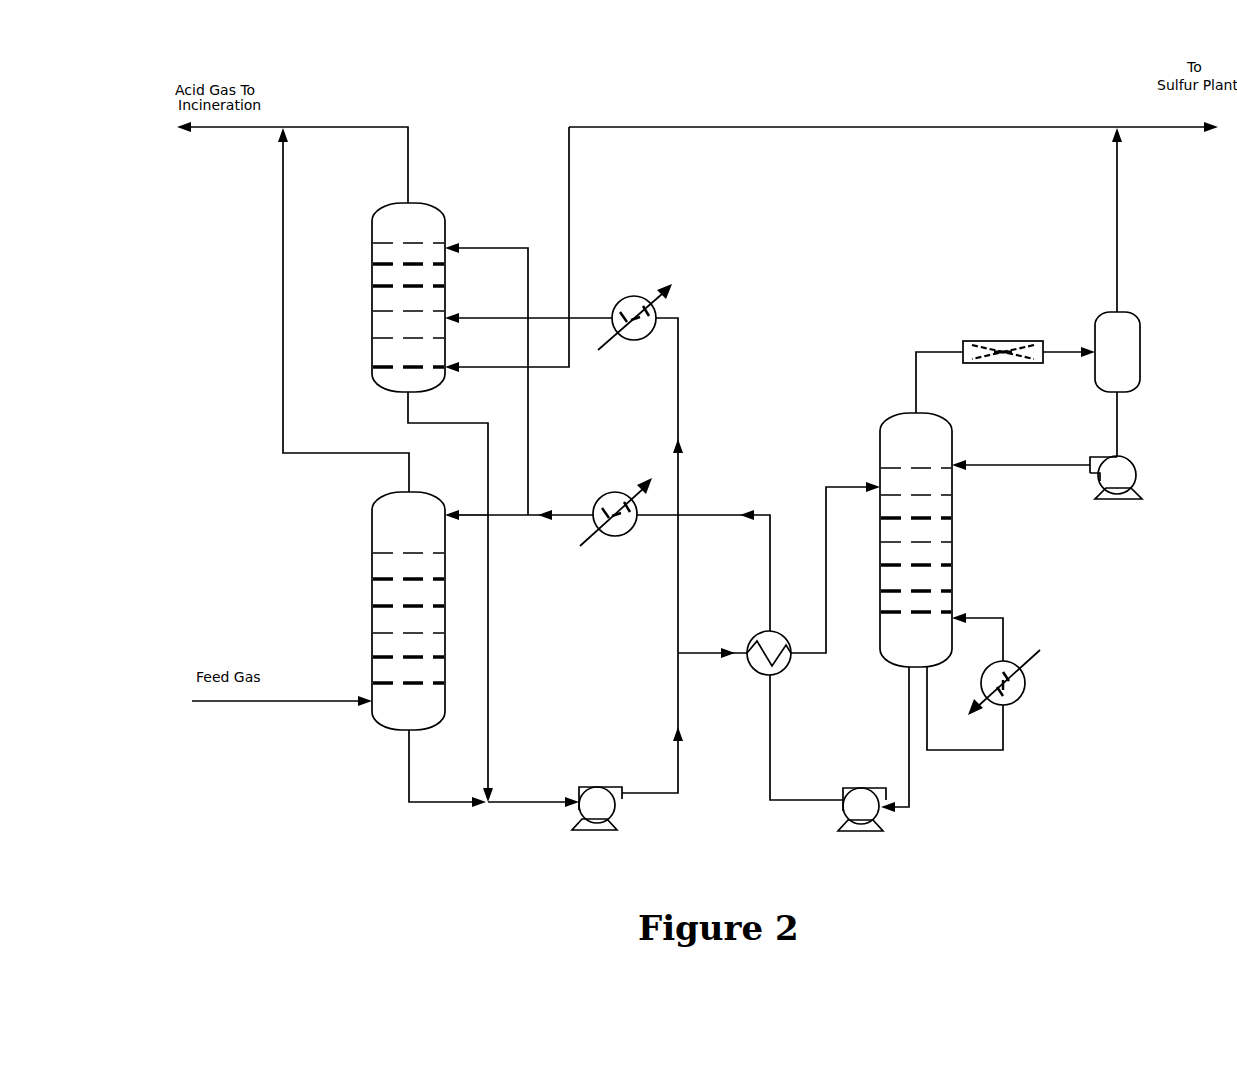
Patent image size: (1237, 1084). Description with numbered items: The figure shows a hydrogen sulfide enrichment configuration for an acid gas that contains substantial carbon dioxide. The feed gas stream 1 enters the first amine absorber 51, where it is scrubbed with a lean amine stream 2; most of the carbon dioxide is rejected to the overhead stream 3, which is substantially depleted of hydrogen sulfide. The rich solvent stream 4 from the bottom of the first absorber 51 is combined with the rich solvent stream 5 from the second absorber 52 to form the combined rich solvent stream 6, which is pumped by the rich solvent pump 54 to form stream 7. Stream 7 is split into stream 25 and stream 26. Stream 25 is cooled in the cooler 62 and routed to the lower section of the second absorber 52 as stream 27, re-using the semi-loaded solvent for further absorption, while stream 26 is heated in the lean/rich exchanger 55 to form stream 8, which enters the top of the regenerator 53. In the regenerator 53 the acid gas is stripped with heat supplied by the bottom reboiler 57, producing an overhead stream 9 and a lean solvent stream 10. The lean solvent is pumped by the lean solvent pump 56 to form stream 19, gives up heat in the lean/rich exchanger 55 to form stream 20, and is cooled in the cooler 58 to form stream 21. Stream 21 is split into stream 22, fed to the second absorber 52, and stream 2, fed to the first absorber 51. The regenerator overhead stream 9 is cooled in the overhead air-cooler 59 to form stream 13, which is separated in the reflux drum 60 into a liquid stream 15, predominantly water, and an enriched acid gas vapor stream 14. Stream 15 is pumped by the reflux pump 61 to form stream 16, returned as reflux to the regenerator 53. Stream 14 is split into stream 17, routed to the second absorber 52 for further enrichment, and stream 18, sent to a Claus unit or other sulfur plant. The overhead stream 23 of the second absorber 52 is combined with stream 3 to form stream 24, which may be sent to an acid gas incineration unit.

The feed gas stream 1 is at (309, 699).
The lean amine stream 2 is at (501, 520).
The overhead stream 3 is at (318, 455).
The rich solvent stream 4 is at (446, 800).
The rich solvent stream 5 is at (490, 660).
The combined rich solvent stream 6 is at (556, 800).
The pumped rich solvent stream 7 is at (672, 706).
The heated rich solvent stream 8 is at (808, 633).
The regenerator overhead stream 9 is at (917, 350).
The lean solvent stream 10 is at (907, 733).
The cooled overhead stream 13 is at (1073, 350).
The enriched acid gas stream 14 is at (1118, 222).
The liquid stream 15 is at (1115, 430).
The reflux stream 16 is at (1027, 463).
The acid gas stream 17 is at (925, 124).
The acid gas stream 18 is at (1170, 124).
The pumped lean solvent stream 19 is at (798, 796).
The lean solvent stream 20 is at (769, 552).
The cooled lean solvent stream 21 is at (553, 512).
The lean solvent stream 22 is at (500, 246).
The overhead stream 23 is at (367, 125).
The combined overhead stream 24 is at (218, 128).
The rich solvent portion 25 is at (710, 657).
The rich solvent portion 26 is at (675, 608).
The cooled rich solvent stream 27 is at (467, 316).
The first amine absorber 51 is at (373, 578).
The second absorber 52 is at (374, 302).
The regenerator 53 is at (878, 558).
The rich solvent pump 54 is at (596, 830).
The lean/rich exchanger 55 is at (756, 631).
The lean solvent pump 56 is at (855, 832).
The reboiler 57 is at (1023, 704).
The cooler 58 is at (599, 488).
The overhead air-cooler 59 is at (1004, 340).
The reflux drum 60 is at (1141, 383).
The reflux pump 61 is at (1125, 498).
The cooler 62 is at (632, 296).